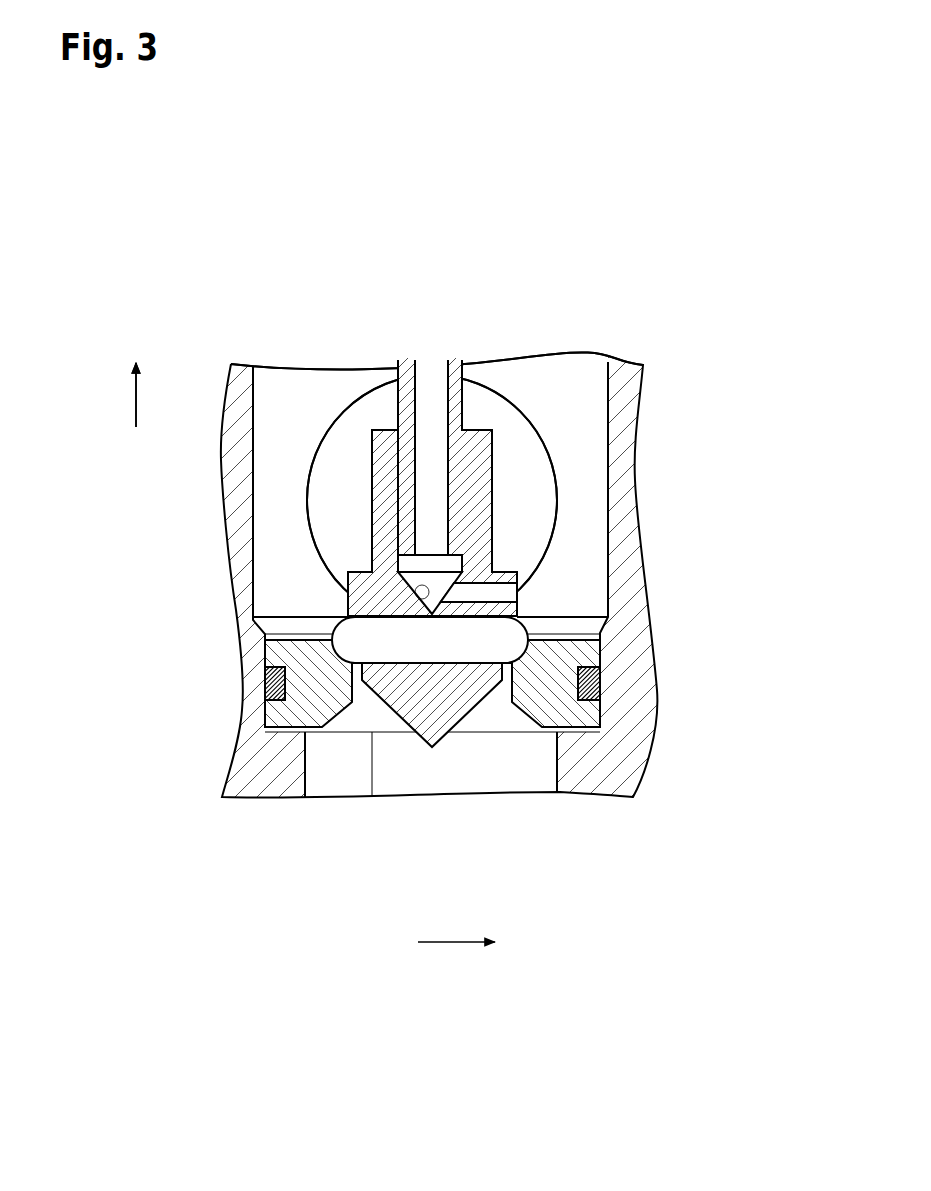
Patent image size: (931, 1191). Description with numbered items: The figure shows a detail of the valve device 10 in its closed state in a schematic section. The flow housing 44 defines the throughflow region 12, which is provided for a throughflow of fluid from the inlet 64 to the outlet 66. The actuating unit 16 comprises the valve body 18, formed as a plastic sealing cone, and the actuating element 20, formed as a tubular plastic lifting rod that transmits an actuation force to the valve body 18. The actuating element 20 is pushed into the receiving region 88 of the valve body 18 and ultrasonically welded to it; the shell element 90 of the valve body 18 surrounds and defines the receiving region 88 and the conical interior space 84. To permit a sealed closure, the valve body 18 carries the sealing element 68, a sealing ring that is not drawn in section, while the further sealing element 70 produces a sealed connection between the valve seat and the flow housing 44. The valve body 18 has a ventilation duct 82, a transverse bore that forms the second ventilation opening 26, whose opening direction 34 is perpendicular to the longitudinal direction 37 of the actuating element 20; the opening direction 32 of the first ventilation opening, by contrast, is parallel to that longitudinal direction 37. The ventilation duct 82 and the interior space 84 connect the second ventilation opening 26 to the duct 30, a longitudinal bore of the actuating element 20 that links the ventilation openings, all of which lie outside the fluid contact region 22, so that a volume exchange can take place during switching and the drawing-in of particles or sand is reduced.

The valve device 10 is at (708, 343).
The throughflow region 12 is at (557, 390).
The actuating unit 16 is at (503, 503).
The valve body 18 is at (418, 695).
The actuating element 20 is at (405, 415).
The fluid contact region 22 is at (472, 408).
The second ventilation opening 26 is at (520, 587).
The duct 30 is at (432, 388).
The opening direction 32 is at (136, 407).
The longitudinal direction 37 is at (136, 407).
The opening direction 34 is at (445, 942).
The flow housing 44 is at (583, 445).
The inlet 64 is at (498, 753).
The outlet 66 is at (353, 488).
The sealing element 68 is at (367, 642).
The further sealing element 70 is at (265, 682).
The ventilation duct 82 is at (480, 590).
The interior space 84 is at (423, 577).
The receiving region 88 is at (397, 532).
The shell element 90 is at (387, 470).